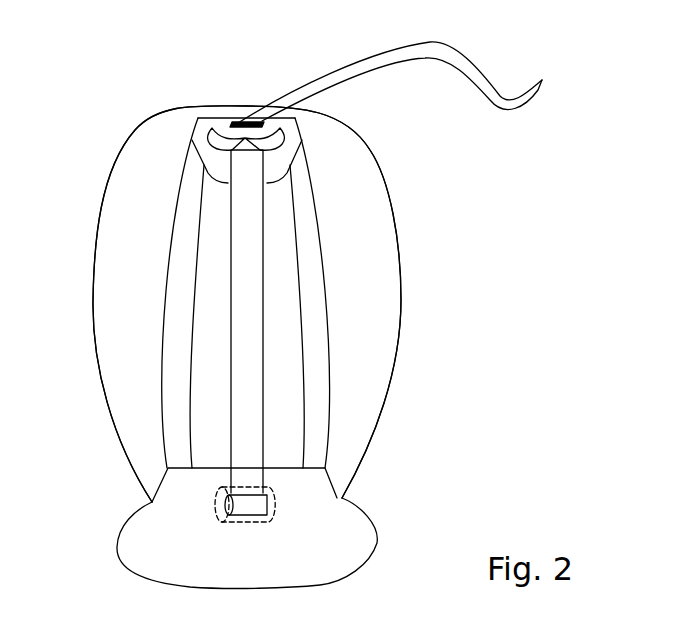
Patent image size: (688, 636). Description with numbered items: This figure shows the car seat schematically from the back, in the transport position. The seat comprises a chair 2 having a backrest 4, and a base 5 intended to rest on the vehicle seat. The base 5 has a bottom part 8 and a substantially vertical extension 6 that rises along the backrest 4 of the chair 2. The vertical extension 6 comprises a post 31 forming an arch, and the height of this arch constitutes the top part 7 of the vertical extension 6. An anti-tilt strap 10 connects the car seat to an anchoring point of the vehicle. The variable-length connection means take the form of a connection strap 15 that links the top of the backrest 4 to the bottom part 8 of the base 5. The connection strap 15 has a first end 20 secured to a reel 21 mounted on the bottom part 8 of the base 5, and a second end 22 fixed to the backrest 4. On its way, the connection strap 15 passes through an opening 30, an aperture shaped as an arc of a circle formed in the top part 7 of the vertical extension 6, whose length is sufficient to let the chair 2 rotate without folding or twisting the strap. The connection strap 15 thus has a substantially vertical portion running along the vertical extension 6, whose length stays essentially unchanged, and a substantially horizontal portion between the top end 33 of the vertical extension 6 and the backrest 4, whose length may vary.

The chair 2 is at (403, 249).
The backrest 4 is at (375, 207).
The base 5 is at (357, 503).
The vertical extension 6 is at (317, 323).
The top part 7 is at (287, 145).
The bottom part 8 is at (352, 552).
The anti-tilt strap 10 is at (345, 70).
The connection strap 15 is at (237, 222).
The first end 20 is at (247, 520).
The reel 21 is at (267, 503).
The second end 22 is at (243, 122).
The opening 30 is at (217, 143).
The post 31 is at (173, 400).
The top end 33 is at (203, 118).